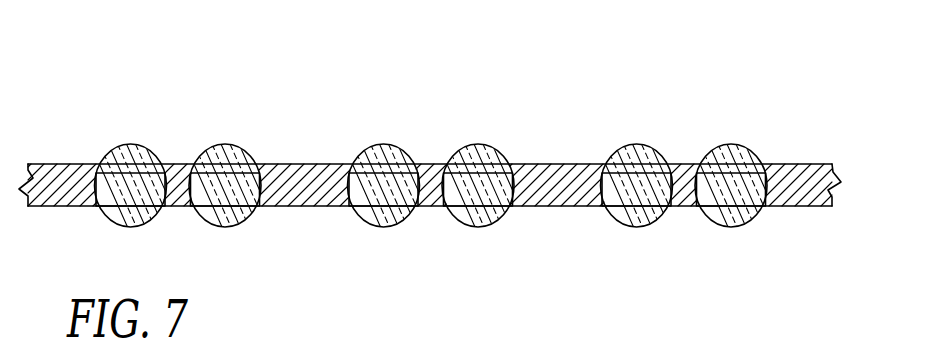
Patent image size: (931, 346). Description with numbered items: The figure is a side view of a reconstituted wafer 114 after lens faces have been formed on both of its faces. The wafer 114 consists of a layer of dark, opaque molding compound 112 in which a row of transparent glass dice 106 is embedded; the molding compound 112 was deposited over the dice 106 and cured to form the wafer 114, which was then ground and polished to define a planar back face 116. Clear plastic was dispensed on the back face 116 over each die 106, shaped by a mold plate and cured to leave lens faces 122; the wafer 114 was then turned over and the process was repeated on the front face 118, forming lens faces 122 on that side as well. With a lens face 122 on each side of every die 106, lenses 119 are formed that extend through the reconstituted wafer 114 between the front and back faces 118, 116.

The die 106 is at (508, 205).
The molding compound layer 112 is at (430, 185).
The reconstituted wafer 114 is at (430, 168).
The back face 116 is at (318, 226).
The front face 118 is at (319, 150).
The lens 119 is at (211, 118).
The lens face 122 is at (446, 173).